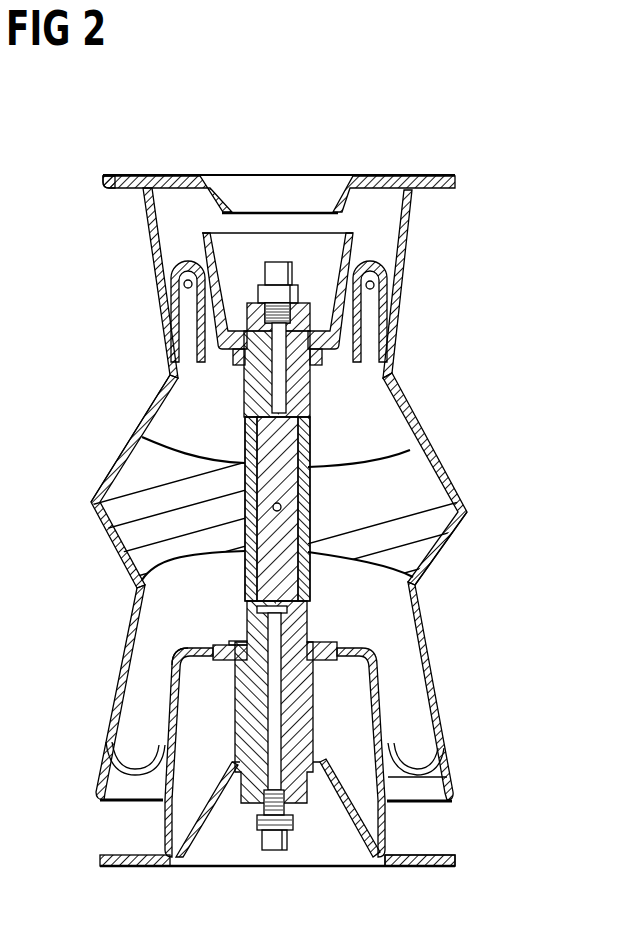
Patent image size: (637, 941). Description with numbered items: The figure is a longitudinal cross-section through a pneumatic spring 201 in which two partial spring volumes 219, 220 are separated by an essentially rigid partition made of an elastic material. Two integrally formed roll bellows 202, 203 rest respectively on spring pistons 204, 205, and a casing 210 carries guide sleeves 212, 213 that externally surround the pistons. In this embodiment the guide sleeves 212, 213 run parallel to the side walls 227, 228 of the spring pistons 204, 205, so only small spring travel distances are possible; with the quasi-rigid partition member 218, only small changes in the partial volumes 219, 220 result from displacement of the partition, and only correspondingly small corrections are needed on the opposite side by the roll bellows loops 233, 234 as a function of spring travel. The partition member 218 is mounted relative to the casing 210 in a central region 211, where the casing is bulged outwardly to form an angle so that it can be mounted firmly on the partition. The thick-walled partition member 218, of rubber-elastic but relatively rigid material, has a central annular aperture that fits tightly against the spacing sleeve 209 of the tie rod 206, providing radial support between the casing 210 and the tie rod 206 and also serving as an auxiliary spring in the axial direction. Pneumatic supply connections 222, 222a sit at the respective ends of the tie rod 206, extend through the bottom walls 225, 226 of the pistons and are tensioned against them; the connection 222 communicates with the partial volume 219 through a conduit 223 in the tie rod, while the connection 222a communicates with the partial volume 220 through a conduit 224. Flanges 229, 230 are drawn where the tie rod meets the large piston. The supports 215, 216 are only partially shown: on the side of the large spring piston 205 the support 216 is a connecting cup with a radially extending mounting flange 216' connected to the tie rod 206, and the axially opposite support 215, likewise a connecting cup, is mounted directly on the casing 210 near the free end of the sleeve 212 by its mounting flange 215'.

The pneumatic spring 201 is at (110, 424).
The roll bellows 202 is at (398, 397).
The roll bellows 203 is at (437, 697).
The spring piston 204 is at (206, 246).
The spring piston 205 is at (375, 803).
The tie rod 206 is at (300, 460).
The spacing sleeve 209 is at (310, 586).
The casing 210 is at (114, 662).
The central region 211 is at (468, 492).
The guide sleeve 212 is at (400, 294).
The guide sleeve 213 is at (440, 745).
The support 215 is at (279, 149).
The mounting flange 215' is at (130, 157).
The support 216 is at (304, 851).
The mounting flange 216' is at (420, 886).
The partition member 218 is at (383, 539).
The partial spring volume 219 is at (386, 433).
The partial spring volume 220 is at (395, 601).
The pneumatic supply connection 222 is at (294, 300).
The pneumatic supply connection 222a is at (272, 851).
The connecting conduit 223 is at (277, 398).
The connecting conduit 224 is at (283, 733).
The bottom wall 225 is at (237, 357).
The bottom wall 226 is at (205, 648).
The side wall 227 is at (213, 290).
The side wall 228 is at (177, 741).
The right flange 229 is at (345, 662).
The left flange 230 is at (233, 641).
The roll bellows loop 233 is at (378, 258).
The roll bellows loop 234 is at (415, 779).